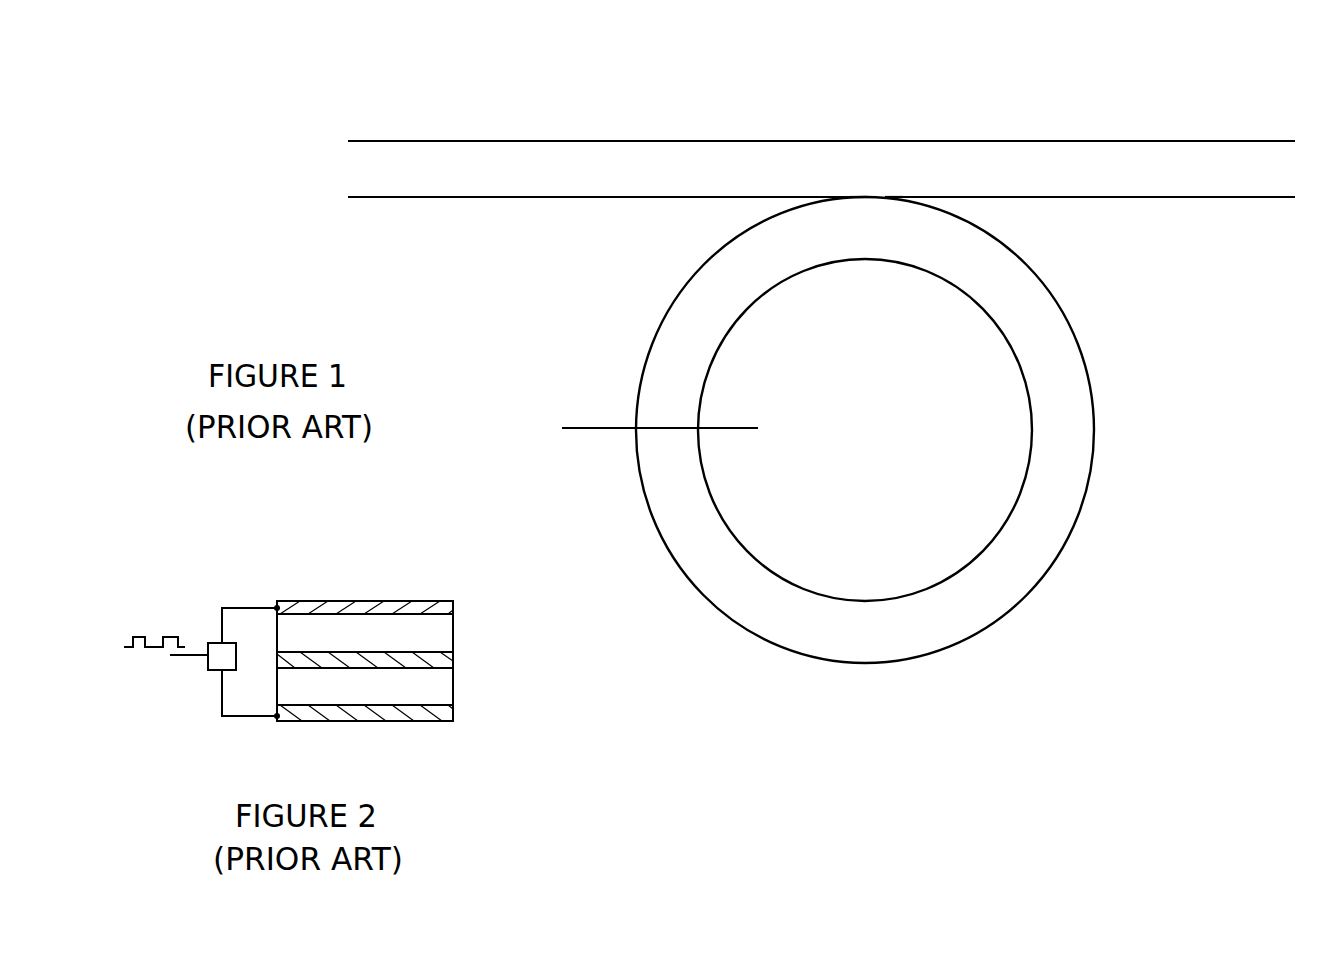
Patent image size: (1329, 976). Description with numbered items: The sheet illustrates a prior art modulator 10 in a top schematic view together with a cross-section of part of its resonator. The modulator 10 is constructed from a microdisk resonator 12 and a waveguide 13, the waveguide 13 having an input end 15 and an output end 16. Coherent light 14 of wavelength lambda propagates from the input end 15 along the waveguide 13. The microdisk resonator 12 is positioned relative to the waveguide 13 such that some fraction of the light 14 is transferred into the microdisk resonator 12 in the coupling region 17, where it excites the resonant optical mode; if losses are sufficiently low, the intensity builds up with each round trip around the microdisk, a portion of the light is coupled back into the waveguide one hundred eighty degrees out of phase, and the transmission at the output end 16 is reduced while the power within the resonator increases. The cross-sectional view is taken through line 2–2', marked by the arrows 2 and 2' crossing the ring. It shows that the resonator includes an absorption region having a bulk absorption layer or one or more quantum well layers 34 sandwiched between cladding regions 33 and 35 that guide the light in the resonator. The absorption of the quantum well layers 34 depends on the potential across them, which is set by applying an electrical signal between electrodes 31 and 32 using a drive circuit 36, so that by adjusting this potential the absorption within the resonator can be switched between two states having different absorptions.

In FIG. 1, the modulator 10 is at (312, 114).
In FIG. 1, the microdisk resonator 12 is at (1074, 334).
In FIG. 1, the waveguide 13 is at (635, 138).
In FIG. 1, the coherent light 14 is at (492, 157).
In FIG. 1, the input end 15 is at (362, 194).
In FIG. 1, the output end 16 is at (1278, 197).
In FIG. 1, the coupling region 17 is at (862, 196).
In FIG. 1, the section line 2 is at (611, 393).
In FIG. 1, the section line 2' is at (709, 393).
In FIG. 2, the electrode 31 is at (407, 608).
In FIG. 2, the electrode 32 is at (433, 710).
In FIG. 2, the cladding region 33 is at (447, 627).
In FIG. 2, the quantum well layers 34 is at (451, 655).
In FIG. 2, the cladding region 35 is at (450, 697).
In FIG. 2, the drive circuit 36 is at (214, 646).